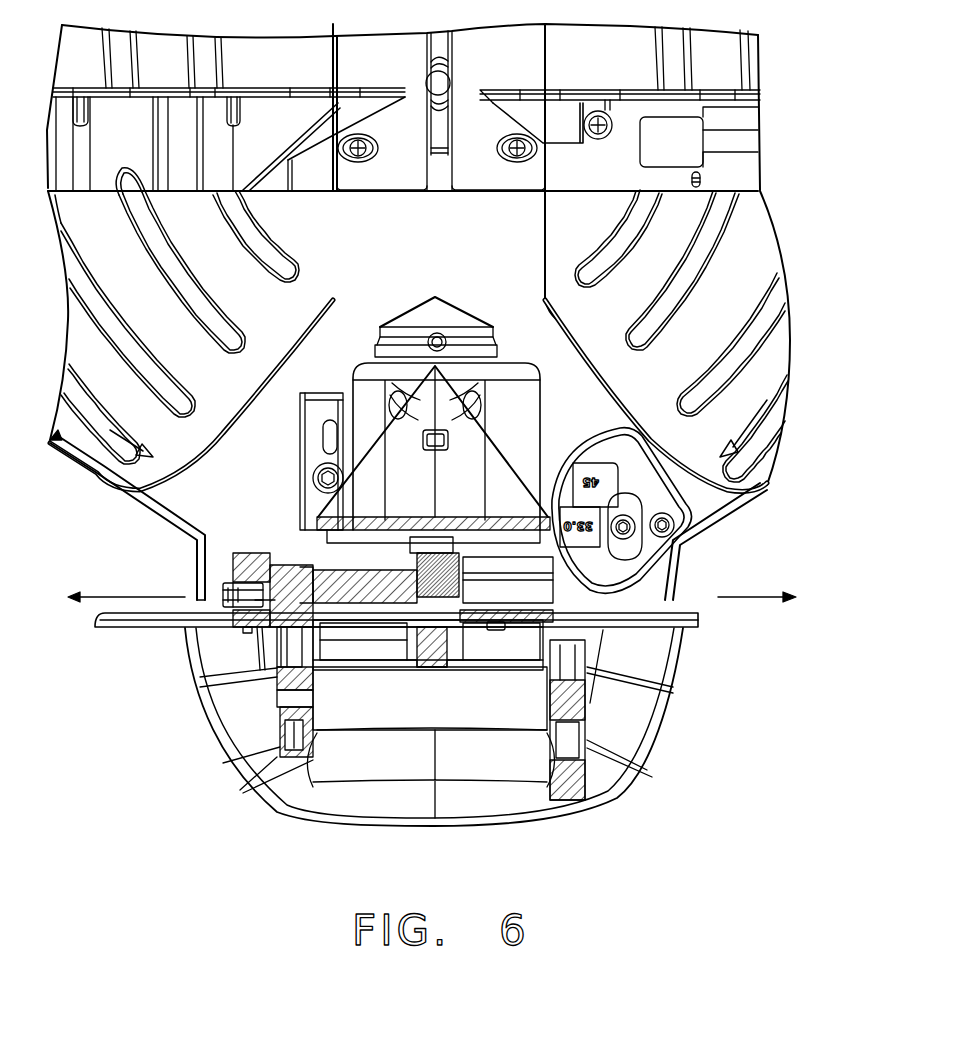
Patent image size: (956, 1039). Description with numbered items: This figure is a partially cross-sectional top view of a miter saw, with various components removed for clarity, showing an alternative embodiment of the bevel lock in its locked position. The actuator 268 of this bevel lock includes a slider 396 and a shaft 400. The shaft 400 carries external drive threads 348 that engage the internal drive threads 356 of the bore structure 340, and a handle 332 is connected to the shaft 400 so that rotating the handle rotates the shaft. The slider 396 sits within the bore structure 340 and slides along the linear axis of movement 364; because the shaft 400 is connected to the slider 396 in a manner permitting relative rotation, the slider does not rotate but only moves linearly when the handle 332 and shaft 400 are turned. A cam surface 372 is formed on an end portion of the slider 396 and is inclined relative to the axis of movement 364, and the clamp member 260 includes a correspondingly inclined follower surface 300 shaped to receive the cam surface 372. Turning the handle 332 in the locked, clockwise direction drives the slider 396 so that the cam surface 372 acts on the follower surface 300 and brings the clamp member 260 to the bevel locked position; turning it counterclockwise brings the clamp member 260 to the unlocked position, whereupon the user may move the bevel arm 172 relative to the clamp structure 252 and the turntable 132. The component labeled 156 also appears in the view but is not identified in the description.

The housing 156 is at (737, 288).
The turntable 132 is at (70, 463).
The bore structure 340 is at (278, 565).
The handle 332 is at (247, 553).
The slider 396 is at (345, 600).
The cam surface 372 is at (420, 560).
The external drive threads 348 is at (388, 592).
The clamp member 260 is at (458, 572).
The bevel arm 172 is at (472, 583).
The linear axis of movement 364 is at (747, 597).
The clamp structure 252 is at (650, 630).
The shaft 400 is at (262, 635).
The actuator 268 is at (362, 622).
The internal drive threads 356 is at (365, 602).
The follower surface 300 is at (447, 603).